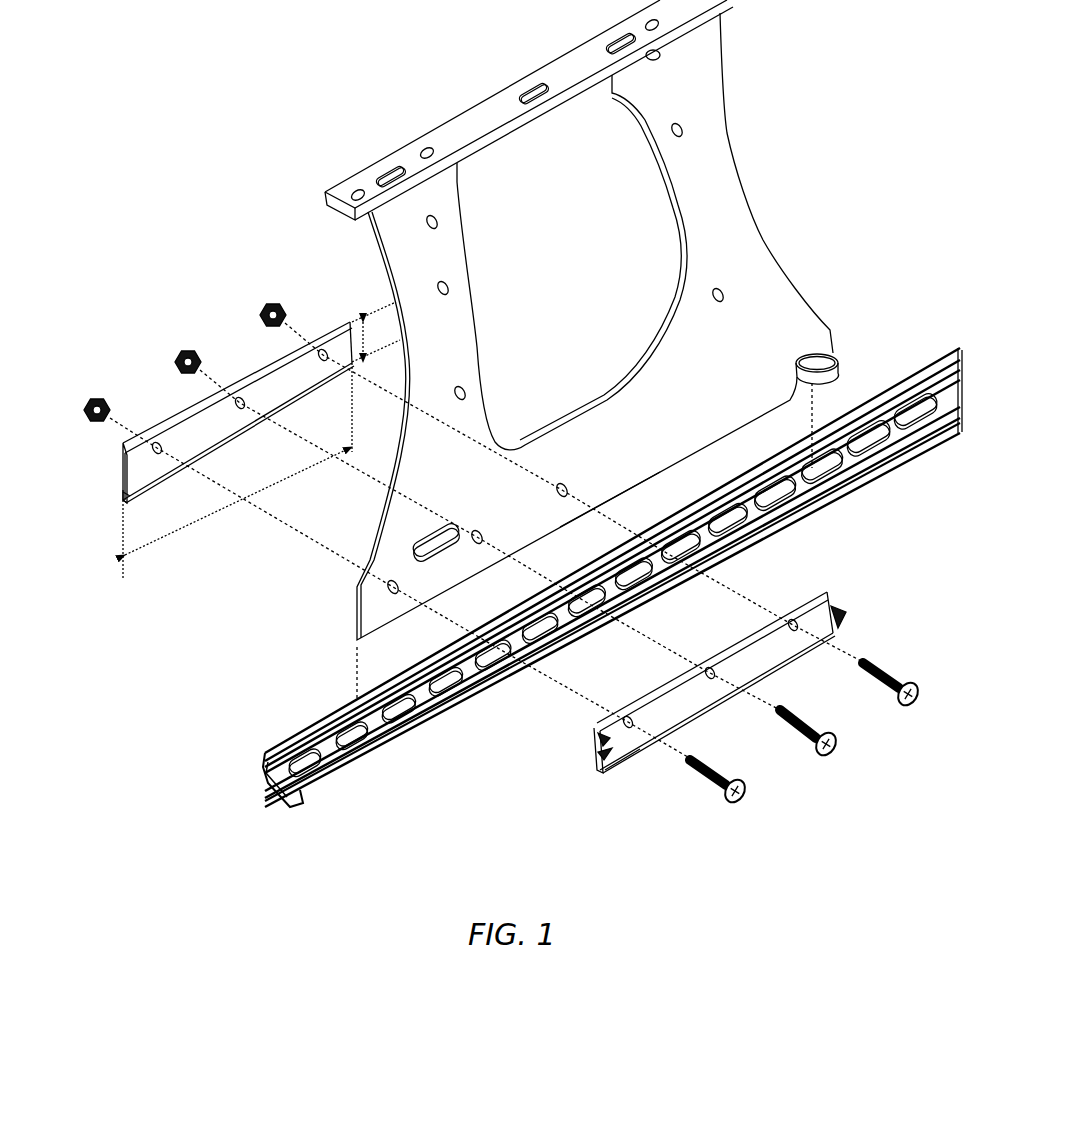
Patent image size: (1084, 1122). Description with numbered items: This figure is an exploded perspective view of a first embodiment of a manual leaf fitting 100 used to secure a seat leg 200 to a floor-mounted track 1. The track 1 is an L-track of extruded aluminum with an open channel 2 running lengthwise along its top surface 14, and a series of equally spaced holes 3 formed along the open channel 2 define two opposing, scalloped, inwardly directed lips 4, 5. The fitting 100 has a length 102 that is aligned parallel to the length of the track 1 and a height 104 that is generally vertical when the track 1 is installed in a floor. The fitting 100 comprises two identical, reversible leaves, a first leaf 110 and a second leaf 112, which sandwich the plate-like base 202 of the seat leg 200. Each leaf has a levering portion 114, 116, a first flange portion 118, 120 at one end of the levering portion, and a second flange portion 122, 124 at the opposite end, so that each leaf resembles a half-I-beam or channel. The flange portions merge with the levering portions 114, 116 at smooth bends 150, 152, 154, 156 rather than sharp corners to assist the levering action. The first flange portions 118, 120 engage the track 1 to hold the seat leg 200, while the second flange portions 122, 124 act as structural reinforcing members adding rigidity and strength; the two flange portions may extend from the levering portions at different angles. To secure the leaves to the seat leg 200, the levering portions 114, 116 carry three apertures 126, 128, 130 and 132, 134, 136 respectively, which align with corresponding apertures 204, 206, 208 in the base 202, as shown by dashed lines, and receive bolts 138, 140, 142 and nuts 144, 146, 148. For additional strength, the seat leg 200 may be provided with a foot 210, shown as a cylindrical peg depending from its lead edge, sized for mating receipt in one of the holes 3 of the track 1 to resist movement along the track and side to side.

The track 1 is at (591, 588).
The open channel 2 is at (265, 778).
The holes 3 is at (870, 455).
The lip 4 is at (292, 735).
The lip 5 is at (317, 788).
The top surface 14 is at (447, 723).
The manual leaf fitting 100 is at (103, 509).
The length 102 is at (237, 470).
The height 104 is at (376, 332).
The first leaf 110 is at (221, 417).
The second leaf 112 is at (830, 590).
The levering portion 114 is at (137, 465).
The levering portion 116 is at (787, 638).
The first flange portion 118 is at (117, 494).
The first flange portion 120 is at (699, 690).
The second flange portion 122 is at (257, 365).
The second flange portion 124 is at (807, 600).
The aperture 126 is at (163, 450).
The aperture 128 is at (242, 408).
The aperture 130 is at (322, 362).
The aperture 132 is at (633, 742).
The aperture 134 is at (715, 682).
The aperture 136 is at (797, 635).
The bolt 138 is at (741, 802).
The bolt 140 is at (832, 755).
The bolt 142 is at (913, 706).
The nut 144 is at (90, 400).
The nut 146 is at (178, 356).
The nut 148 is at (262, 308).
The smooth bend 150 is at (126, 497).
The smooth bend 152 is at (160, 425).
The smooth bend 154 is at (594, 770).
The smooth bend 156 is at (626, 718).
The seat leg 200 is at (751, 166).
The base 202 is at (623, 487).
The aperture 204 is at (398, 596).
The aperture 206 is at (483, 548).
The aperture 208 is at (564, 500).
The foot 210 is at (838, 362).